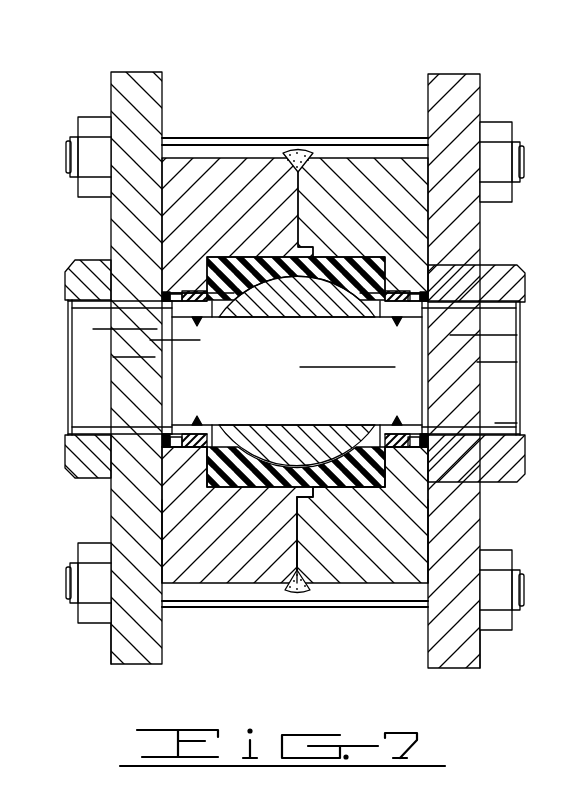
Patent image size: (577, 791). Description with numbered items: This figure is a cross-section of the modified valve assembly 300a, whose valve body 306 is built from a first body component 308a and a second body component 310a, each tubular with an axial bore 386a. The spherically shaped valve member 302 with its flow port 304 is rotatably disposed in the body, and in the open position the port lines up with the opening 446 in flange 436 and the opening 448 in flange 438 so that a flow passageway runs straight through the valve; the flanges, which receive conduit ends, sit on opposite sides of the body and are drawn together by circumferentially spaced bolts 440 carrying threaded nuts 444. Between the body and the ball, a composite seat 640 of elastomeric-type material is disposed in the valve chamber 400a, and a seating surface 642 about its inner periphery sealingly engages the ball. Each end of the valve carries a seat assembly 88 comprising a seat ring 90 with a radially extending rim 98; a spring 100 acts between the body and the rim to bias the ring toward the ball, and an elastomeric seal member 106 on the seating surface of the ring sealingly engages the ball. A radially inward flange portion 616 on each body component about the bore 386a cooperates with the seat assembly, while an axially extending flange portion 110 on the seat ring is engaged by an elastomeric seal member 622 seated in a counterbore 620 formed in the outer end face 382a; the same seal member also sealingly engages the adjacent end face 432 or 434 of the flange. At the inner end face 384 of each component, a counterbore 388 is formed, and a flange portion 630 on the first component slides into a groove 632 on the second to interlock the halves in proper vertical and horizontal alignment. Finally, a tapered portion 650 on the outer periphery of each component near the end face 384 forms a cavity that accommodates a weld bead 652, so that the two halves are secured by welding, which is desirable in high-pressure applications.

The valve assembly 300a is at (291, 78).
The valve body 306 is at (252, 159).
The bolts 440 is at (316, 147).
The threaded nuts 444 is at (92, 125).
The opening 446 is at (68, 314).
The opening 448 is at (509, 312).
The flange portion 110 is at (190, 321).
The seat assembly 88 is at (175, 333).
The seat ring 90 is at (197, 323).
The rim 98 is at (242, 300).
The valve member 302 is at (232, 319).
The flow port 304 is at (288, 319).
The elastomeric seal member 106 is at (214, 420).
The seating surface 642 is at (252, 460).
The composite seat 640 is at (256, 470).
The flange portion 630 is at (295, 492).
The groove 632 is at (299, 495).
The end face 384 is at (313, 553).
The counterbore 388 is at (237, 490).
The valve chamber 400a is at (348, 490).
The spring 100 is at (212, 463).
The bore 386a is at (190, 430).
The elastomeric seal member 622 is at (168, 421).
The counterbore 620 is at (165, 444).
The flange portion 616 is at (170, 458).
The end face 382a is at (160, 533).
The end face 432 is at (163, 653).
The end face 434 is at (432, 662).
The flange 436 is at (132, 660).
The flange 438 is at (478, 665).
The first body component 308a is at (222, 575).
The second body component 310a is at (410, 585).
The tapered portion 650 is at (325, 618).
The weld bead 652 is at (300, 600).